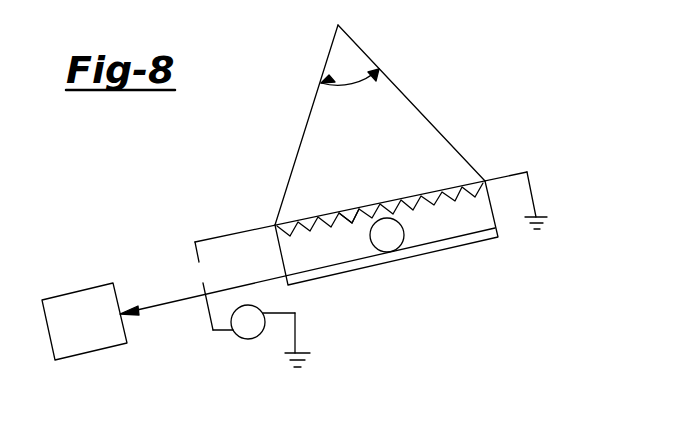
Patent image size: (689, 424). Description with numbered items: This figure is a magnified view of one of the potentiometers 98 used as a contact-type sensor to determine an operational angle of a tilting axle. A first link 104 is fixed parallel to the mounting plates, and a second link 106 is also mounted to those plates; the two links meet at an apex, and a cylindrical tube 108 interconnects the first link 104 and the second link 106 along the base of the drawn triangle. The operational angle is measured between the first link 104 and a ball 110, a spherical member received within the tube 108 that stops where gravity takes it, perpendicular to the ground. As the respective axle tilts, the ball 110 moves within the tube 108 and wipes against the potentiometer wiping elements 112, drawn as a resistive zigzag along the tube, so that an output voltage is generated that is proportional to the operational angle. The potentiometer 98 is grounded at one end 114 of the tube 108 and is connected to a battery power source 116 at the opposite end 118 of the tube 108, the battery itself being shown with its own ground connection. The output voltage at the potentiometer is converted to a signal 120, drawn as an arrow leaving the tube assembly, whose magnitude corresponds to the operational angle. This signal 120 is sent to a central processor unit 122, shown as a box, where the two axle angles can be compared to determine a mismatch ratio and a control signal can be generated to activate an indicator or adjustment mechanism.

The potentiometer 98 is at (368, 115).
The first link 104 is at (329, 51).
The second link 106 is at (361, 50).
The cylindrical tube 108 is at (455, 222).
The ball 110 is at (385, 229).
The potentiometer wiping elements 112 is at (346, 222).
The one end of the tube 114 is at (493, 202).
The battery power source 116 is at (243, 330).
The opposite end of the tube 118 is at (282, 258).
The signal 120 is at (166, 302).
The central processor unit (CPU) 122 is at (72, 305).